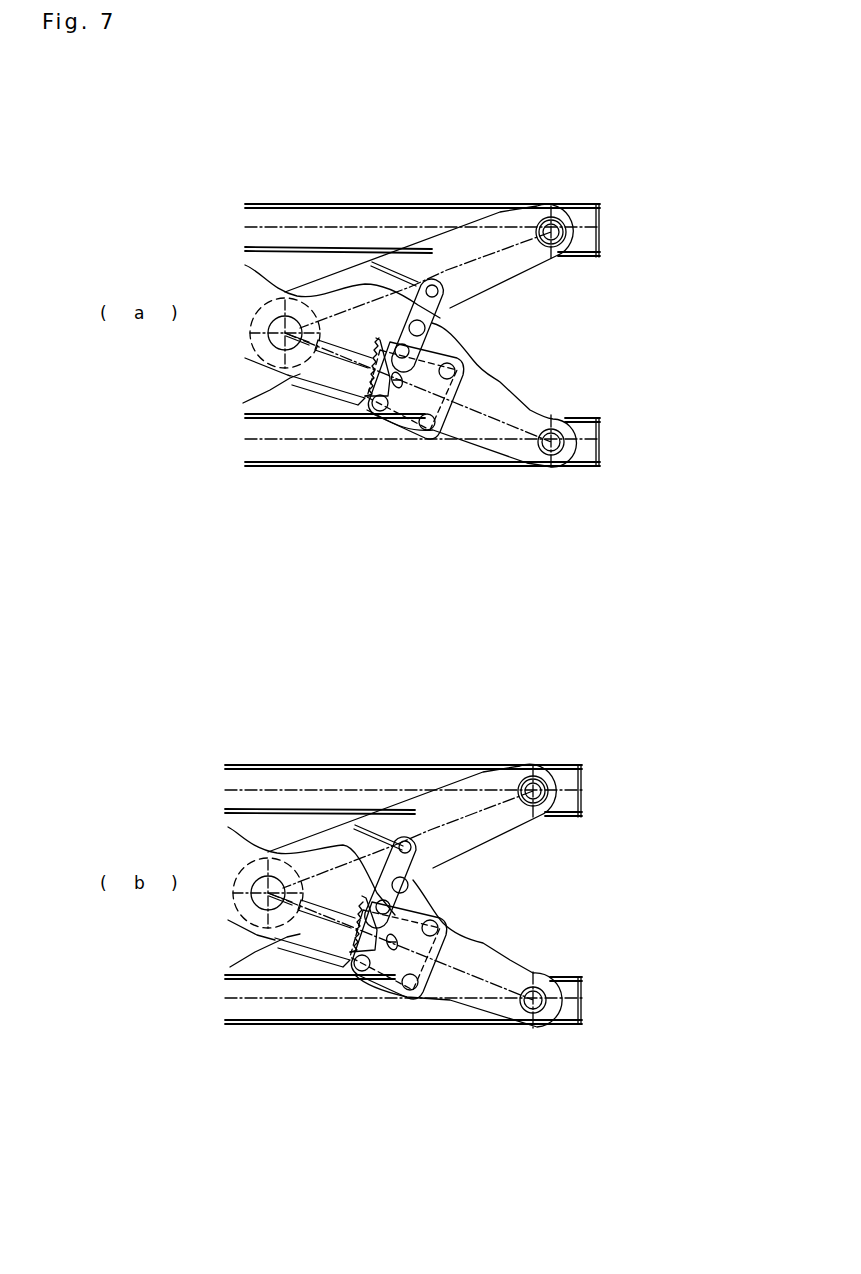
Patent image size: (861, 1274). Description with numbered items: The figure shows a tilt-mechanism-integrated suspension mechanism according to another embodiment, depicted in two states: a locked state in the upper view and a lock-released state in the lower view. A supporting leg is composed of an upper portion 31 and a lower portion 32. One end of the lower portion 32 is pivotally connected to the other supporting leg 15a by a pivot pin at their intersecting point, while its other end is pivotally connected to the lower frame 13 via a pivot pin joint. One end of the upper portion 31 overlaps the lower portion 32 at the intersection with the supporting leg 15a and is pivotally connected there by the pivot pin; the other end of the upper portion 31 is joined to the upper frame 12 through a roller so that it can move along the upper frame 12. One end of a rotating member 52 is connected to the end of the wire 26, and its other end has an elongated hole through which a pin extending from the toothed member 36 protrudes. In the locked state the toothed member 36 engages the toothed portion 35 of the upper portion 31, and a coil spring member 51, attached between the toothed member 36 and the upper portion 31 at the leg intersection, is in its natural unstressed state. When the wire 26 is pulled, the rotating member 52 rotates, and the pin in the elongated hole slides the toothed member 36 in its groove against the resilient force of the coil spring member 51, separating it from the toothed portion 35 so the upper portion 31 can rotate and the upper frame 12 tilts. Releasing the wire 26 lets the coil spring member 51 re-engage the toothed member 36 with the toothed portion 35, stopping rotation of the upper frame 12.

The upper frame 12 is at (485, 207).
The lower frame 13 is at (585, 467).
The supporting leg 15a is at (537, 258).
The wire 26 is at (414, 287).
The upper portion 31 is at (302, 360).
The lower portion 32 is at (503, 425).
The toothed portion 35 is at (343, 382).
The toothed member 36 is at (411, 395).
The coil spring member 51 is at (336, 328).
The rotating member 52 is at (430, 308).